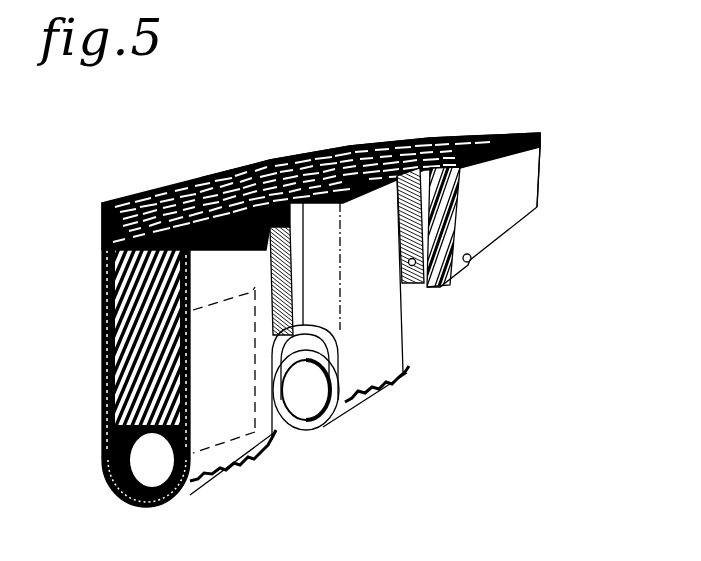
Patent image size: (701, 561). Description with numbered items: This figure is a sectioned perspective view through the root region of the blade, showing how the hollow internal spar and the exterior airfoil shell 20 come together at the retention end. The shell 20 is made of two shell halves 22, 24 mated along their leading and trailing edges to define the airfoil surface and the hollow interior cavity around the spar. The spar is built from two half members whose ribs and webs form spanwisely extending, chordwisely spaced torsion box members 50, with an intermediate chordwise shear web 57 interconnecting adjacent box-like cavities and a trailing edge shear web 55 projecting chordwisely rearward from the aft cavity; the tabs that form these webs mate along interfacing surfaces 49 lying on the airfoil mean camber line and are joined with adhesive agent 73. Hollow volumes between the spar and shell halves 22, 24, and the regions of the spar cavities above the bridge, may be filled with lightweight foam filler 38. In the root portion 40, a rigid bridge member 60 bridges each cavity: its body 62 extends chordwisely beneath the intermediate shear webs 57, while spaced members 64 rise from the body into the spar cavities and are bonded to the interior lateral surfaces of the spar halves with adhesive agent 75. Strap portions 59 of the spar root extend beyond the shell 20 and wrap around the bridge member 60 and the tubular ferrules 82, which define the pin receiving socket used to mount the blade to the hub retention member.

The exterior airfoil shell 20 is at (492, 218).
The shell half 22 is at (497, 133).
The shell half 24 is at (530, 133).
The lightweight foam filler 38 is at (283, 158).
The root portion 40 is at (207, 487).
The interfacing surface 49 is at (457, 183).
The torsion box member 50 is at (181, 181).
The trailing edge shear web 55 is at (407, 283).
The intermediate chordwise shear web 57 is at (293, 290).
The strap portion 59 is at (388, 363).
The rigid bridge member 60 is at (207, 302).
The body 62 is at (110, 432).
The spaced member 64 is at (133, 297).
The adhesive agent 73 is at (270, 162).
The adhesive agent 75 is at (108, 384).
The tubular ferrule 82 is at (313, 398).